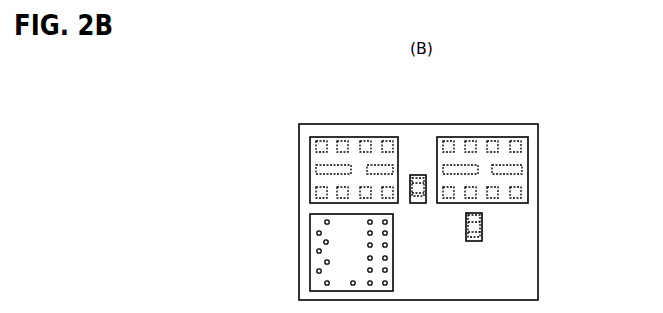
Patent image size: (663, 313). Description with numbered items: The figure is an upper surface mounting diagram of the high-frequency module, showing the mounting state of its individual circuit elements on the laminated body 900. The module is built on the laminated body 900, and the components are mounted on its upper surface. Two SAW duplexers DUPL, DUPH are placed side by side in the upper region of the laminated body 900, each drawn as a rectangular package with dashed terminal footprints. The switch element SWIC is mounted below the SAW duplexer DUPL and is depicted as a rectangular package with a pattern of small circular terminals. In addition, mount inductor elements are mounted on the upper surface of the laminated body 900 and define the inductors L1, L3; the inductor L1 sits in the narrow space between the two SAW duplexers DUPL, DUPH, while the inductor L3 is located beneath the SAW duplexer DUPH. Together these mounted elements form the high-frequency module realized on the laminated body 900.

The laminated body 900 is at (551, 272).
The SAW duplexer DUPL is at (356, 136).
The SAW duplexer DUPH is at (483, 136).
The inductor L1 is at (418, 173).
The inductor L3 is at (484, 229).
The switch element SWIC is at (318, 246).